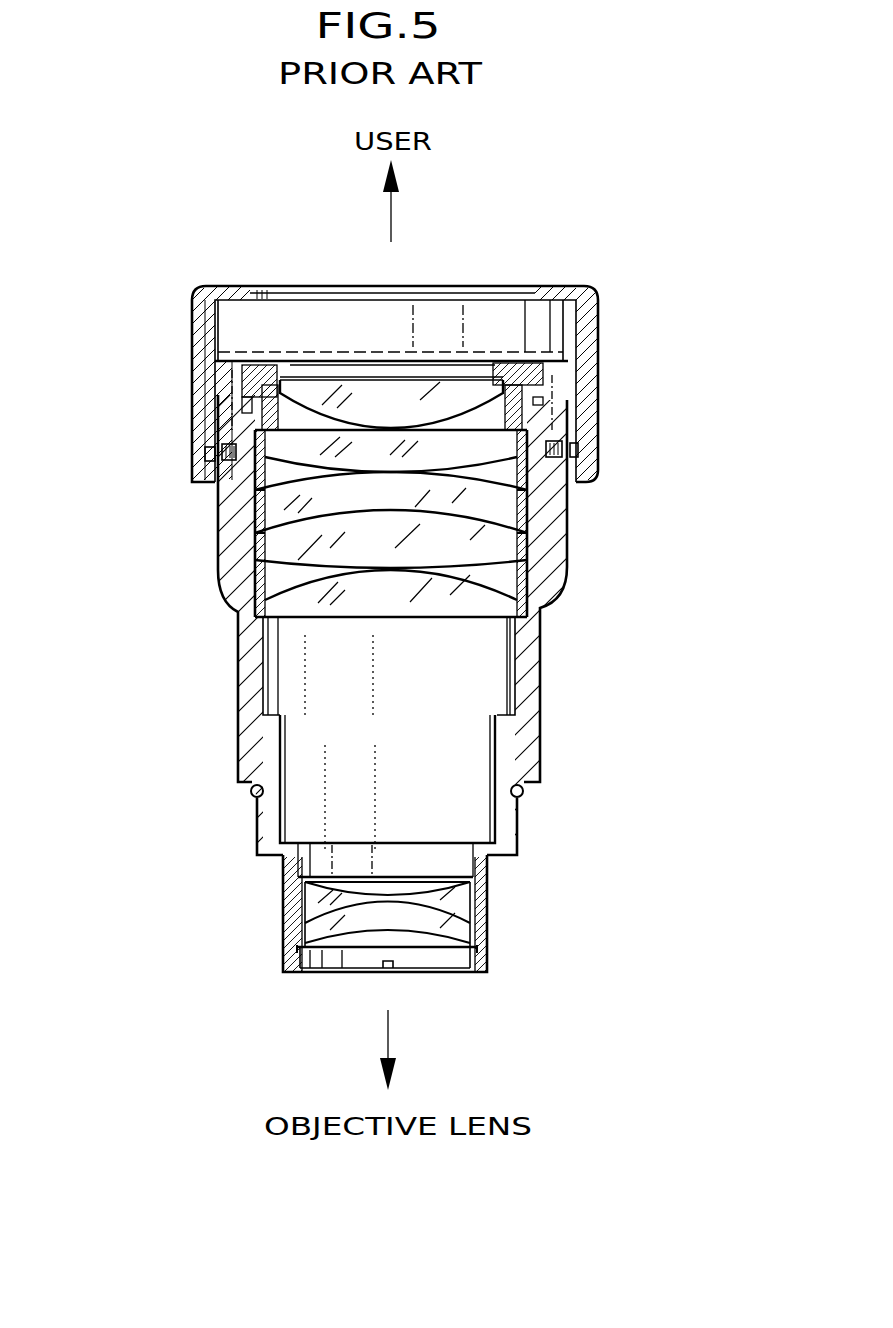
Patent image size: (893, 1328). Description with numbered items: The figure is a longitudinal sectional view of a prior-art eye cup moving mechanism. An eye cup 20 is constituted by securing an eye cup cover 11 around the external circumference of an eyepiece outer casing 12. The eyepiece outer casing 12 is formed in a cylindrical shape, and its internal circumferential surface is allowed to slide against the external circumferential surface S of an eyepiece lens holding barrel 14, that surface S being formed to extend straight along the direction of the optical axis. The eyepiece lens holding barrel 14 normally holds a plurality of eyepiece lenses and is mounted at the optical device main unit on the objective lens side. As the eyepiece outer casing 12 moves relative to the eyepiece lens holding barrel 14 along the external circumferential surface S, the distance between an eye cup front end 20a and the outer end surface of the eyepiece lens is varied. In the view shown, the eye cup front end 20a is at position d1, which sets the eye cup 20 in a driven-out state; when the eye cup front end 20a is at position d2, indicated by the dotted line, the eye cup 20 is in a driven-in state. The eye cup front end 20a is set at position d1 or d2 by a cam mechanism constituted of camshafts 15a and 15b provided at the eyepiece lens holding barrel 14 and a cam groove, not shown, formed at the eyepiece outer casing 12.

The eye cup front end 20a is at (552, 282).
The eye cup 20 is at (694, 296).
The eye cup cover 11 is at (587, 343).
The eyepiece outer casing 12 is at (578, 407).
The eyepiece lens holding barrel 14 is at (553, 526).
The camshaft 15a is at (578, 449).
The camshaft 15b is at (207, 461).
The position d1 is at (196, 286).
The position d2 is at (190, 352).
The external circumferential surface S is at (216, 533).